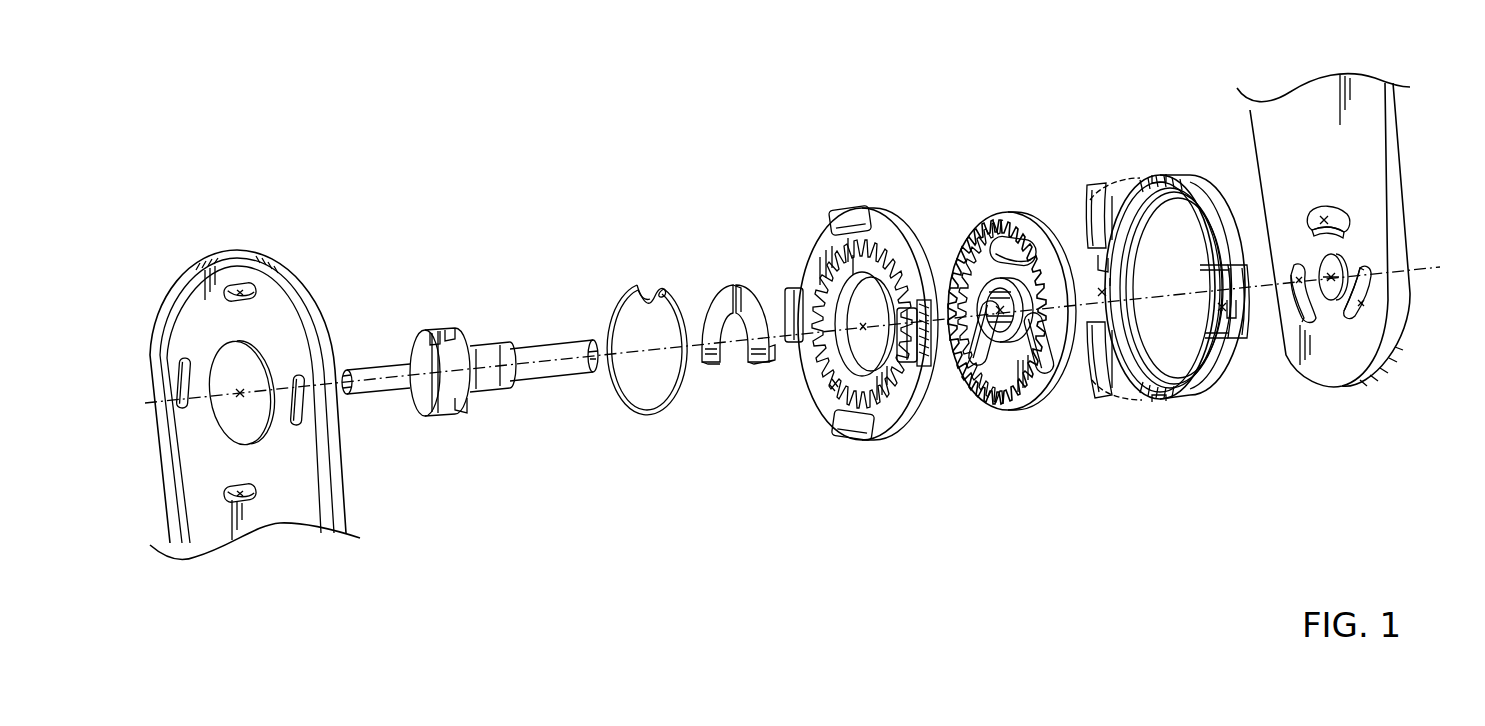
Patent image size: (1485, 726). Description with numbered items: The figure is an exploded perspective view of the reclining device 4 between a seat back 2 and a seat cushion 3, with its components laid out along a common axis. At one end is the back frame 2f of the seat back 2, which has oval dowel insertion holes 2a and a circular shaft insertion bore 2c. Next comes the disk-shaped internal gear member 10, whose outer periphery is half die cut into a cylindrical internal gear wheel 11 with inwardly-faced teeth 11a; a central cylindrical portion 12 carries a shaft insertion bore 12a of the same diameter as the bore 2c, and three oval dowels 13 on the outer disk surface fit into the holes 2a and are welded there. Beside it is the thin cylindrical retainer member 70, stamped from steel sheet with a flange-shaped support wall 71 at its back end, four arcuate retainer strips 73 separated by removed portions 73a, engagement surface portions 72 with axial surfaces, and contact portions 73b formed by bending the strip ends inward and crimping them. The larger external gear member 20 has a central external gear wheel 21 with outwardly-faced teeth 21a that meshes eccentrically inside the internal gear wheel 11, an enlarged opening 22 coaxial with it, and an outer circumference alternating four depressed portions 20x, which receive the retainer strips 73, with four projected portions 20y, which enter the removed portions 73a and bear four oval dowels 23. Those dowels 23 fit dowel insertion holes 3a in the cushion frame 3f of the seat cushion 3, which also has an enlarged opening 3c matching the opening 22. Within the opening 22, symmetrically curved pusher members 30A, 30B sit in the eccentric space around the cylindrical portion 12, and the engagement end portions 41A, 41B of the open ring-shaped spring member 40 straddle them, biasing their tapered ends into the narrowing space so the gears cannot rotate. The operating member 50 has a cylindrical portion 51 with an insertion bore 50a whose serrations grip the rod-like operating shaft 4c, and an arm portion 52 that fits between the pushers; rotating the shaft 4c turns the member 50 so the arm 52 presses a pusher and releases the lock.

The seat back 2 is at (1323, 213).
The back frame 2f is at (1296, 110).
The dowel insertion holes 2a is at (1327, 212).
The shaft insertion bore 2c is at (1332, 300).
The seat cushion 3 is at (256, 384).
The cushion frame 3f is at (300, 290).
The dowel insertion holes 3a is at (240, 287).
The enlarged opening 3c is at (242, 388).
The reclining device 4 is at (530, 128).
The operating shaft 4c is at (399, 390).
The internal gear member 10 is at (1015, 306).
The internal gear wheel 11 is at (1045, 388).
The inwardly-faced teeth 11a is at (1022, 398).
The cylindrical portion 12 is at (1001, 335).
The shaft insertion bore 12a is at (1000, 300).
The dowels 13 is at (1020, 258).
The external gear member 20 is at (834, 317).
The depressed portions 20x is at (830, 240).
The projected portions 20y is at (796, 294).
The external gear wheel 21 is at (871, 262).
The outwardly-faced teeth 21a is at (828, 410).
The enlarged opening 22 is at (845, 378).
The dowels 23 is at (788, 310).
The pusher member 30A is at (713, 355).
The pusher member 30B is at (760, 355).
The spring member 40 is at (622, 292).
The engagement end portion 41A is at (655, 285).
The engagement end portion 41B is at (664, 290).
The operating member 50 is at (420, 345).
The insertion bore 50a is at (447, 334).
The cylindrical portion 51 is at (488, 344).
The arm portion 52 is at (463, 412).
The retainer member 70 is at (1216, 198).
The support wall 71 is at (1140, 234).
The engagement surface portions 72 is at (1101, 262).
The retainer strips 73 is at (1096, 184).
The removed portions 73a is at (1172, 180).
The contact portions 73b is at (1112, 188).